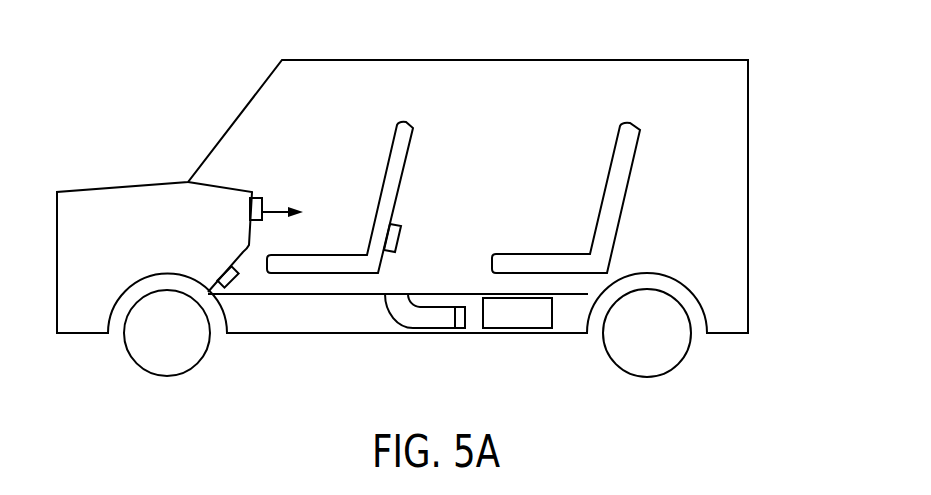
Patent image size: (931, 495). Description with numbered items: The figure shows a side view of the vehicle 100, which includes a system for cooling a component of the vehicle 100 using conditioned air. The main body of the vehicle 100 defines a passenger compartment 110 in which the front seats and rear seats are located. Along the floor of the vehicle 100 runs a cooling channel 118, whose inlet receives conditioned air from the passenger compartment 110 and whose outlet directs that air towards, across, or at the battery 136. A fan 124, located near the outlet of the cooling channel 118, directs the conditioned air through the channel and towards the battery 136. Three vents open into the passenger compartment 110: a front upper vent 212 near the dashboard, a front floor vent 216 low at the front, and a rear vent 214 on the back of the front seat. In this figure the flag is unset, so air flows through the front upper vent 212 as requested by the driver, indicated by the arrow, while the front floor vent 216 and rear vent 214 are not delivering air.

The vehicle 100 is at (748, 215).
The passenger compartment 110 is at (537, 83).
The cooling channel 118 is at (415, 318).
The fan 124 is at (460, 320).
The battery 136 is at (522, 318).
The front upper vent 212 is at (262, 203).
The rear vent 214 is at (401, 237).
The front floor vent 216 is at (233, 285).